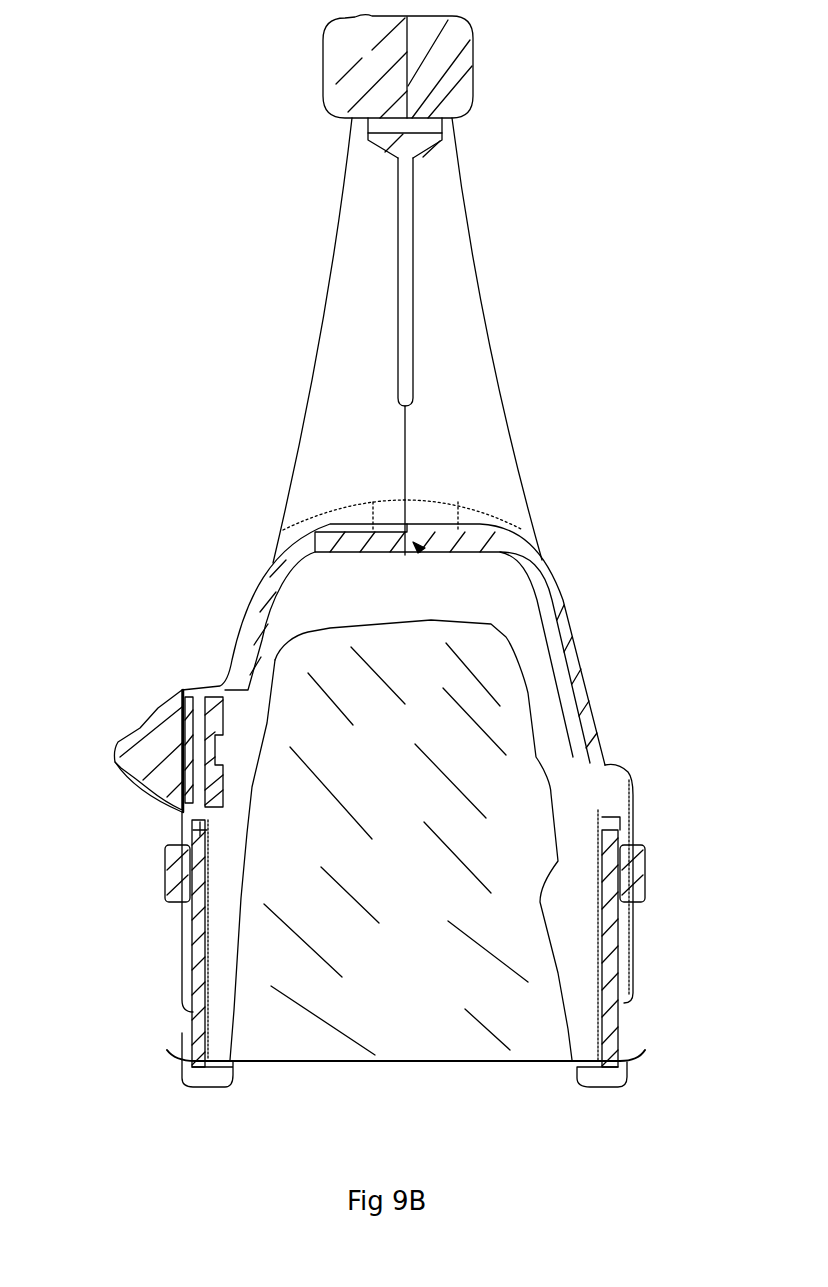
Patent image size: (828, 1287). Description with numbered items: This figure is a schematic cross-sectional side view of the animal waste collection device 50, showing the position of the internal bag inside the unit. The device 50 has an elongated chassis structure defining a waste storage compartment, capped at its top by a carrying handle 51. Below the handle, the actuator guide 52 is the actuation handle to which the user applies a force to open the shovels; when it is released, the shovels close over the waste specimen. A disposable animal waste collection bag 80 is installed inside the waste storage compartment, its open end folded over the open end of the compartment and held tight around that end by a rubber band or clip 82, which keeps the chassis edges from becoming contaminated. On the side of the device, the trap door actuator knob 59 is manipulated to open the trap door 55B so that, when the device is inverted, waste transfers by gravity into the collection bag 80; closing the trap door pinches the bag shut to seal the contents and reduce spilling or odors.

The animal waste collection device 50 is at (245, 465).
The carrying handle 51 is at (352, 80).
The actuator guide 52 is at (416, 148).
The trap door actuator knob 59 is at (122, 724).
The trap door 55B is at (604, 880).
The animal waste collection bag 80 is at (412, 965).
The clip 82 is at (266, 1066).